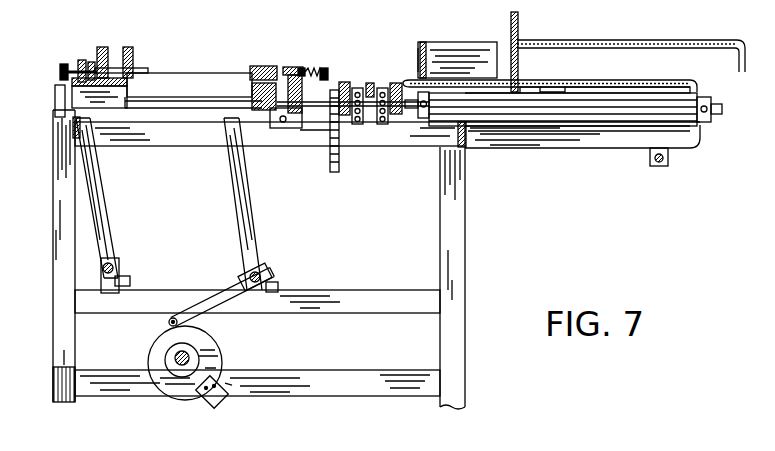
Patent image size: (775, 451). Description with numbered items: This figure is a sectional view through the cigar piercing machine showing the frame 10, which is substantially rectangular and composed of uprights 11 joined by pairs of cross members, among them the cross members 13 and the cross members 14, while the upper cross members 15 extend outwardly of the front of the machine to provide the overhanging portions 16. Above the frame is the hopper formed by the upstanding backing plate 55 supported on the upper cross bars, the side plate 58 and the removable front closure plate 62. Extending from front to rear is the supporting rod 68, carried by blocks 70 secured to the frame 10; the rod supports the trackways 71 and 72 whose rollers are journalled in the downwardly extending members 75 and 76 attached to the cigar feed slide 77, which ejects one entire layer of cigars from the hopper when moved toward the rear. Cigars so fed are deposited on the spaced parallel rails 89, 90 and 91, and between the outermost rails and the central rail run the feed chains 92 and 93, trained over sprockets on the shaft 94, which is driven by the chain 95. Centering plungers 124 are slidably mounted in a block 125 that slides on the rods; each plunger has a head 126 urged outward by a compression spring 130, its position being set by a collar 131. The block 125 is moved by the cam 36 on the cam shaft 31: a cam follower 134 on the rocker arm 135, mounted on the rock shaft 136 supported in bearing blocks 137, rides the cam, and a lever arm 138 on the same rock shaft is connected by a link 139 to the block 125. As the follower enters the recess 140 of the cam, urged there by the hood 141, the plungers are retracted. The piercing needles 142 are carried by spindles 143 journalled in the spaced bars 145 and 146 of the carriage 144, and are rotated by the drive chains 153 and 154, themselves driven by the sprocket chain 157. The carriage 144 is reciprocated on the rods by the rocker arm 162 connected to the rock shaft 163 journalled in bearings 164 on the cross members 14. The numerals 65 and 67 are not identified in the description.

The frame 10 is at (259, 259).
The uprights 11 is at (57, 215).
The cross members 13 is at (400, 397).
The cross members 14 is at (397, 313).
The upper cross members 15 is at (155, 143).
The overhanging portions 16 is at (612, 147).
The cam shaft 31 is at (175, 353).
The cam 36 is at (215, 348).
The backing plate 55 is at (418, 55).
The side plate 58 is at (470, 48).
The front closure plate 62 is at (518, 25).
The upper guide bar 65 is at (642, 42).
The motor mounting plate 67 is at (426, 50).
The supporting rod 68 is at (512, 113).
The blocks 70 is at (717, 103).
The trackway 71 is at (558, 122).
The trackway 72 is at (603, 88).
The downwardly extending member 75 is at (552, 88).
The downwardly extending member 76 is at (670, 162).
The cigar feed slide 77 is at (667, 80).
The rail 89 is at (395, 83).
The central rail 90 is at (370, 83).
The rail 91 is at (350, 82).
The feed chain 92 is at (382, 128).
The feed chain 93 is at (354, 128).
The shaft 94 is at (402, 112).
The chain 95 is at (332, 157).
The plungers 124 is at (302, 70).
The block 125 is at (295, 68).
The head 126 is at (320, 68).
The compression spring 130 is at (323, 83).
The collar 131 is at (290, 68).
The cam follower 134 is at (178, 315).
The rocker arm 135 is at (218, 287).
The rock shaft 136 is at (243, 268).
The bearing blocks 137 is at (278, 283).
The lever arm 138 is at (240, 168).
The link 139 is at (243, 133).
The recess 140 is at (232, 385).
The hood 141 is at (222, 403).
The needles 142 is at (238, 73).
The spindles 143 is at (145, 70).
The carriage 144 is at (115, 102).
The bar 145 is at (103, 47).
The bar 146 is at (135, 47).
The drive chain 153 is at (78, 65).
The drive chain 154 is at (88, 62).
The sprocket chain 157 is at (62, 74).
The rocker arm 162 is at (105, 198).
The rock shaft 163 is at (118, 267).
The bearings 164 is at (127, 279).